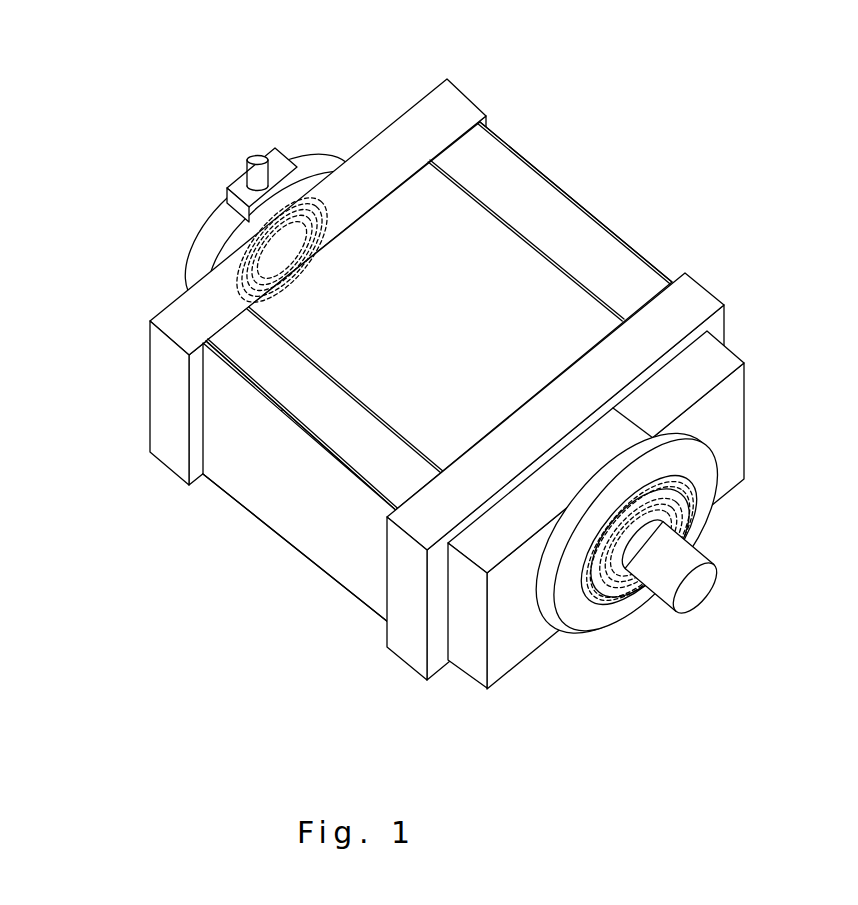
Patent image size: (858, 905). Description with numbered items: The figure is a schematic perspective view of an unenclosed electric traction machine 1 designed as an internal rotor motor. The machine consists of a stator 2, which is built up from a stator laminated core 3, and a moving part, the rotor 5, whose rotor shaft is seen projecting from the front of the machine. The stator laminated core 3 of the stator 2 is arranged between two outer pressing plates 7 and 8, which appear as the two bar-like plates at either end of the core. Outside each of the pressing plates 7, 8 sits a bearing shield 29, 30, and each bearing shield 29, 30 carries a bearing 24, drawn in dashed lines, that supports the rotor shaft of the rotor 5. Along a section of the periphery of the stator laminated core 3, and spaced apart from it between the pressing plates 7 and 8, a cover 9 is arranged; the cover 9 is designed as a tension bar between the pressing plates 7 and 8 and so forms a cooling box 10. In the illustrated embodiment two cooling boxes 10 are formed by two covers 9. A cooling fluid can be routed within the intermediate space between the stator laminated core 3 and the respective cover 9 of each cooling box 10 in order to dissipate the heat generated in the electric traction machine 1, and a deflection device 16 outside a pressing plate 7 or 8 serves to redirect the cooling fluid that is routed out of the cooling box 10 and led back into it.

The electric traction machine 1 is at (266, 635).
The stator 2 is at (462, 289).
The stator laminated core 3 is at (432, 217).
The rotor 5 is at (667, 576).
The pressing plate 7 is at (684, 322).
The pressing plate 8 is at (185, 317).
The cover 9 is at (230, 431).
The cooling box 10 is at (403, 474).
The deflection device 16 is at (471, 631).
The bearing 24 is at (299, 217).
The bearing shield 29 is at (699, 491).
The bearing shield 30 is at (330, 155).